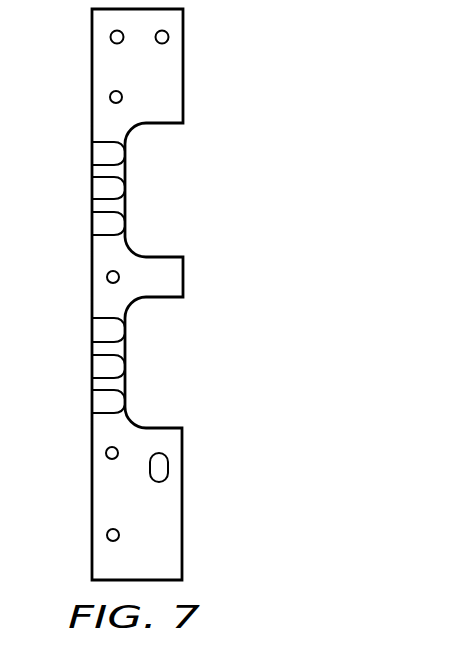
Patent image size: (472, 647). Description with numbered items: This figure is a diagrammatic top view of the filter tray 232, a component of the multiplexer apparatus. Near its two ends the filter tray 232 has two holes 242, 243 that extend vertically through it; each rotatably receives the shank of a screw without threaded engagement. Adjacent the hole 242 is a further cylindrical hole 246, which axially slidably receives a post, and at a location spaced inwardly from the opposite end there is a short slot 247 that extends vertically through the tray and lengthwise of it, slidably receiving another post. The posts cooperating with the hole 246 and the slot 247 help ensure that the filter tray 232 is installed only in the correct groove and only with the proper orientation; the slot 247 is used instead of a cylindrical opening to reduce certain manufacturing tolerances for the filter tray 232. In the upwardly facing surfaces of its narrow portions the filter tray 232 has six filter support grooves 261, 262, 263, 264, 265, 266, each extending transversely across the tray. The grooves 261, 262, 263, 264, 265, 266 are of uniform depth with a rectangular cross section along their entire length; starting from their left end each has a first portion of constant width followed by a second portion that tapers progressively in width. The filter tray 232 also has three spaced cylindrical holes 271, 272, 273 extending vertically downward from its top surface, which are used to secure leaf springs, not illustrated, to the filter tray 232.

The filter tray 232 is at (176, 557).
The hole 242 is at (111, 35).
The hole 243 is at (108, 538).
The cylindrical hole 246 is at (158, 43).
The slot 247 is at (156, 484).
The filter support groove 261 is at (101, 162).
The filter support groove 262 is at (101, 196).
The filter support groove 263 is at (101, 232).
The filter support groove 264 is at (101, 339).
The filter support groove 265 is at (101, 374).
The filter support groove 266 is at (101, 409).
The cylindrical hole 271 is at (110, 96).
The cylindrical hole 272 is at (108, 280).
The cylindrical hole 273 is at (107, 456).